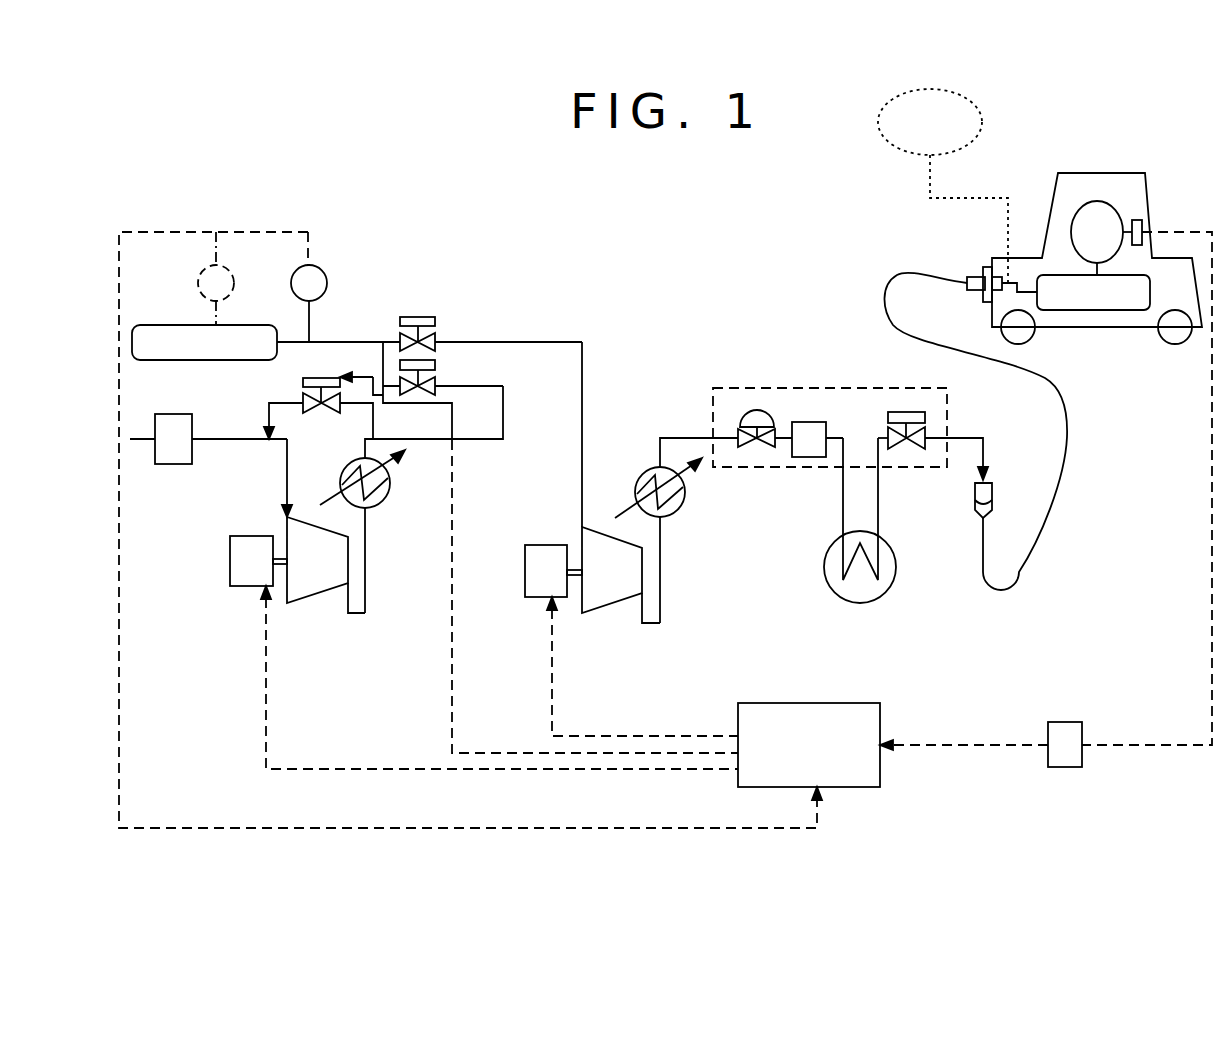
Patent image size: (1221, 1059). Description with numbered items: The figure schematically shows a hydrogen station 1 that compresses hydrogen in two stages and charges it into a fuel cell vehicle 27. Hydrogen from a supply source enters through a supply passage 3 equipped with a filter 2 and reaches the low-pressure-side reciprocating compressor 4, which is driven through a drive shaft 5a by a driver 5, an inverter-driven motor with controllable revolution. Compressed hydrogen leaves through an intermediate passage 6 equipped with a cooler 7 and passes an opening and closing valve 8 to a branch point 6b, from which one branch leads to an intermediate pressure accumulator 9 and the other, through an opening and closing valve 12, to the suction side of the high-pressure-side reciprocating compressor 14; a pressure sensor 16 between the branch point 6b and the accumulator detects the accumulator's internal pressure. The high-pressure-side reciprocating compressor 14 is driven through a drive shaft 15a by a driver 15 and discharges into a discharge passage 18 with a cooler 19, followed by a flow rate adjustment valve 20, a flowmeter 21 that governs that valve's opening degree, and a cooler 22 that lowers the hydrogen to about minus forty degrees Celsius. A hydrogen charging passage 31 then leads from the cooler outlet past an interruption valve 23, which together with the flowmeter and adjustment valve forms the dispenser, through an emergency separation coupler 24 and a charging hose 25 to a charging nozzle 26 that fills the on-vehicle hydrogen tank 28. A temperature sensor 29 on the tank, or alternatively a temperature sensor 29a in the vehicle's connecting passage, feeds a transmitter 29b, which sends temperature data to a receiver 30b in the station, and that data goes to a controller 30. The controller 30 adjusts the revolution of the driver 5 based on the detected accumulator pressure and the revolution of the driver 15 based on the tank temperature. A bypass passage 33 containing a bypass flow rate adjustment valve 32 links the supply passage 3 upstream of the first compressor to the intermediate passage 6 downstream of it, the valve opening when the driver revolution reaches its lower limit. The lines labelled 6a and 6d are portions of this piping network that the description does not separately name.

The hydrogen station 1 is at (258, 128).
The filter 2 is at (175, 466).
The supply passage 3 is at (217, 441).
The low-pressure-side reciprocating compressor 4 is at (302, 510).
The driver 5 is at (245, 588).
The drive shaft 5a is at (282, 566).
The intermediate passage 6 is at (368, 615).
The branch line 6a is at (503, 410).
The branch point 6b is at (378, 340).
The connecting line 6d is at (583, 342).
The cooler 7 is at (380, 503).
The opening and closing valve 8 is at (440, 367).
The intermediate pressure accumulator 9 is at (190, 362).
The opening and closing valve 12 is at (436, 320).
The high-pressure-side reciprocating compressor 14 is at (598, 614).
The driver 15 is at (530, 599).
The drive shaft 15a is at (575, 577).
The pressure sensor 16 is at (198, 280).
The discharge passage 18 is at (663, 625).
The cooler 19 is at (680, 512).
The flow rate adjustment valve 20 is at (760, 415).
The flowmeter 21 is at (808, 420).
The cooler 22 is at (840, 598).
The interruption valve 23 is at (905, 410).
The emergency separation coupler 24 is at (995, 480).
The charging hose 25 is at (983, 585).
The charging nozzle 26 is at (972, 277).
The fuel cell vehicle 27 is at (1118, 173).
The on-vehicle hydrogen tank 28 is at (1115, 312).
The temperature sensor 29 is at (1075, 200).
The temperature sensor 29a is at (982, 112).
The transmitter 29b is at (1145, 220).
The controller 30 is at (882, 770).
The receiver 30b is at (1065, 769).
The hydrogen charging passage 31 is at (880, 512).
The bypass flow rate adjustment valve 32 is at (338, 375).
The bypass passage 33 is at (290, 398).